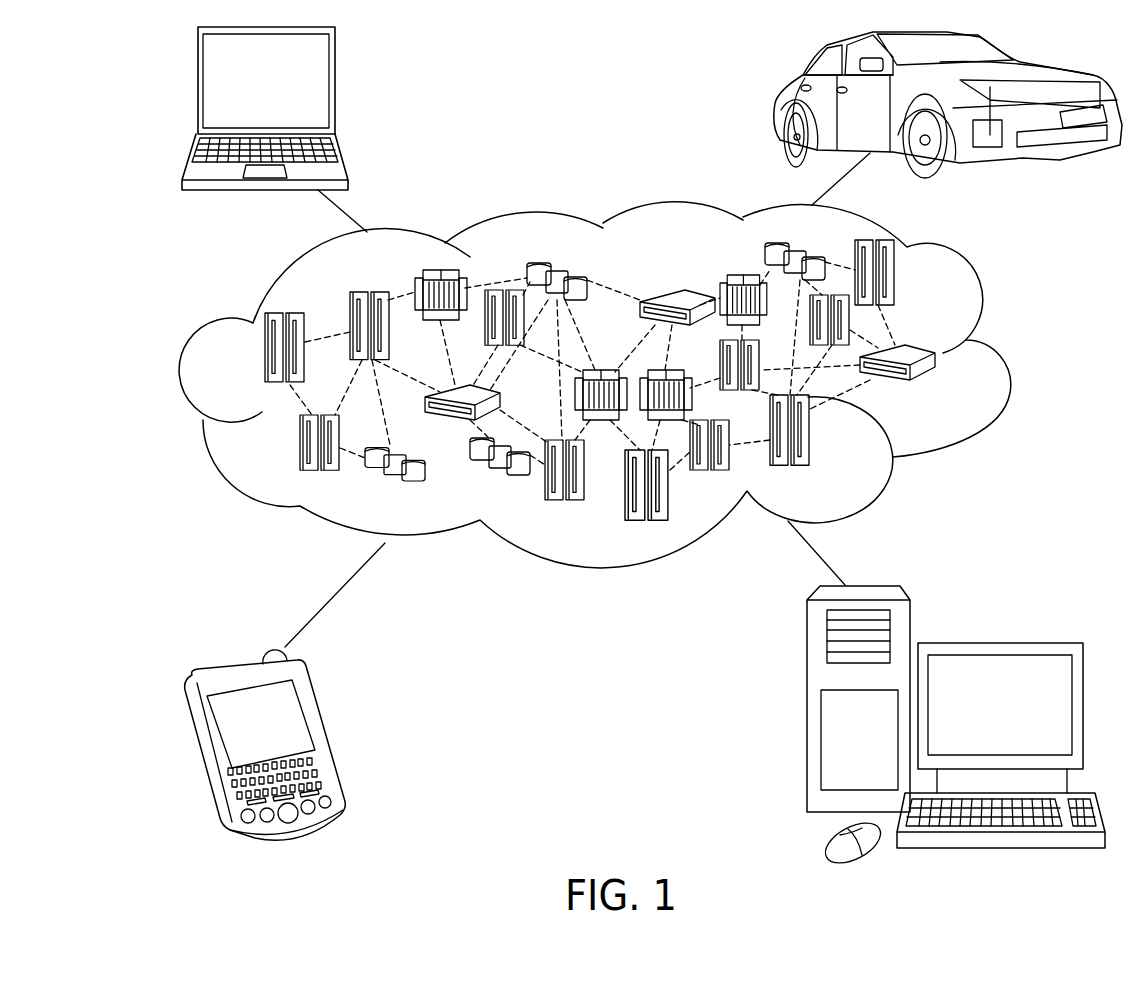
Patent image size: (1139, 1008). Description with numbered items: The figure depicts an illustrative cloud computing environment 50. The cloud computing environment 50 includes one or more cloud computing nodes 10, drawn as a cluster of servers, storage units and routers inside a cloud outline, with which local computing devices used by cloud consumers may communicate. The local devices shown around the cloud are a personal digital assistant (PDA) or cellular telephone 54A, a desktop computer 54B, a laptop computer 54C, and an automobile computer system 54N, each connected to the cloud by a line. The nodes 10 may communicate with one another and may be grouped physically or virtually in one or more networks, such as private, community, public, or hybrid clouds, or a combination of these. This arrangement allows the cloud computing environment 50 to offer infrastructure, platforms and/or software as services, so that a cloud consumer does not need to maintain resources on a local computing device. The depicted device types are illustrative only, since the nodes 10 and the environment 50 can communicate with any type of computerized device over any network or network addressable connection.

The cloud computing nodes 10 is at (618, 400).
The cloud computing environment 50 is at (997, 357).
The personal digital assistant (PDA) or cellular telephone 54A is at (322, 733).
The desktop computer 54B is at (998, 642).
The laptop computer 54C is at (335, 87).
The automobile computer system 54N is at (772, 102).